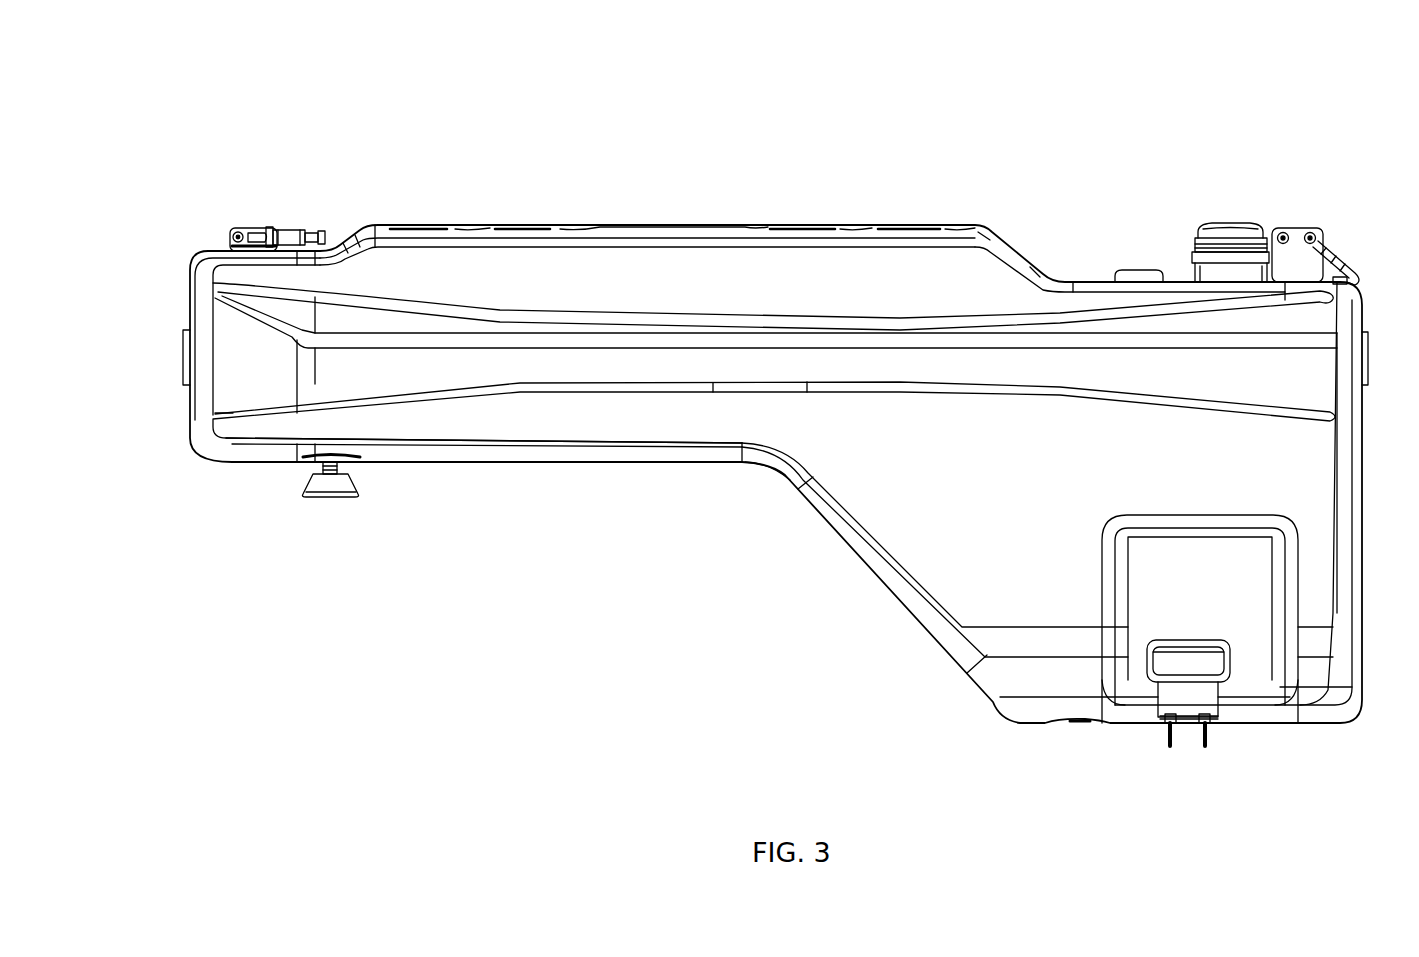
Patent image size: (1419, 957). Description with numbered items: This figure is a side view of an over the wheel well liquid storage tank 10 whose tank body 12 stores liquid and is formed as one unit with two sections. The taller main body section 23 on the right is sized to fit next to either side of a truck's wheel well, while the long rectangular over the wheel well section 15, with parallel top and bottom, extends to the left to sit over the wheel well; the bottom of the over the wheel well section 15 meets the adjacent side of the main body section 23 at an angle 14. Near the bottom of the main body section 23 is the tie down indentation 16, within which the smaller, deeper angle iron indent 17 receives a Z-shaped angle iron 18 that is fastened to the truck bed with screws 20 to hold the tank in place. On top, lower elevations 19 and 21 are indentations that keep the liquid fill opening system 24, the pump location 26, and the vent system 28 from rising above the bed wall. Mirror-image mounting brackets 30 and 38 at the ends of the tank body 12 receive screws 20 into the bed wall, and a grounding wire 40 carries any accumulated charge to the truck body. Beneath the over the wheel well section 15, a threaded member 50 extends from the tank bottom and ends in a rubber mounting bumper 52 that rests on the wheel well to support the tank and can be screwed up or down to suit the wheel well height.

The over the wheel well liquid storage tank 10 is at (684, 166).
The tank body 12 is at (977, 550).
The angle 14 is at (780, 468).
The over the wheel well section 15 is at (533, 415).
The tie down indentation 16 is at (1138, 652).
The angle iron indent 17 is at (1222, 663).
The angle iron 18 is at (1198, 700).
The lower elevation 19 is at (1346, 281).
The screws 20 is at (238, 232).
The lower elevation 21 is at (205, 251).
The main body section 23 is at (1290, 467).
The liquid fill opening system 24 is at (1226, 226).
The pump location 26 is at (1140, 272).
The vent system 28 is at (283, 238).
The mounting bracket 30 is at (248, 232).
The mounting bracket 38 is at (1300, 235).
The grounding wire 40 is at (1353, 264).
The threaded member 50 is at (340, 467).
The mounting bumper 52 is at (340, 486).